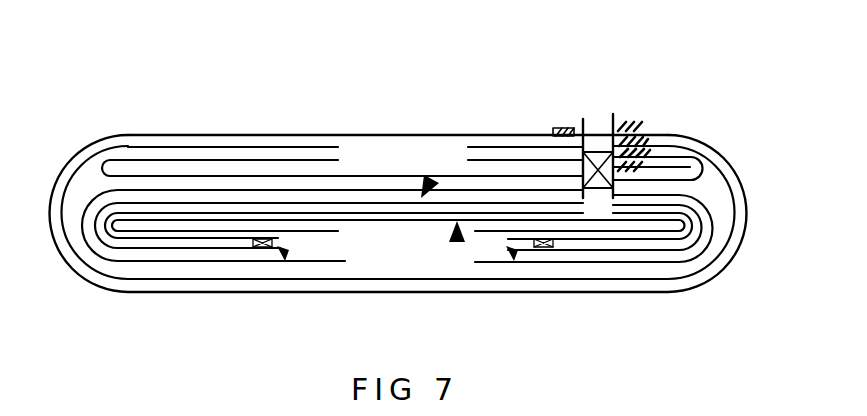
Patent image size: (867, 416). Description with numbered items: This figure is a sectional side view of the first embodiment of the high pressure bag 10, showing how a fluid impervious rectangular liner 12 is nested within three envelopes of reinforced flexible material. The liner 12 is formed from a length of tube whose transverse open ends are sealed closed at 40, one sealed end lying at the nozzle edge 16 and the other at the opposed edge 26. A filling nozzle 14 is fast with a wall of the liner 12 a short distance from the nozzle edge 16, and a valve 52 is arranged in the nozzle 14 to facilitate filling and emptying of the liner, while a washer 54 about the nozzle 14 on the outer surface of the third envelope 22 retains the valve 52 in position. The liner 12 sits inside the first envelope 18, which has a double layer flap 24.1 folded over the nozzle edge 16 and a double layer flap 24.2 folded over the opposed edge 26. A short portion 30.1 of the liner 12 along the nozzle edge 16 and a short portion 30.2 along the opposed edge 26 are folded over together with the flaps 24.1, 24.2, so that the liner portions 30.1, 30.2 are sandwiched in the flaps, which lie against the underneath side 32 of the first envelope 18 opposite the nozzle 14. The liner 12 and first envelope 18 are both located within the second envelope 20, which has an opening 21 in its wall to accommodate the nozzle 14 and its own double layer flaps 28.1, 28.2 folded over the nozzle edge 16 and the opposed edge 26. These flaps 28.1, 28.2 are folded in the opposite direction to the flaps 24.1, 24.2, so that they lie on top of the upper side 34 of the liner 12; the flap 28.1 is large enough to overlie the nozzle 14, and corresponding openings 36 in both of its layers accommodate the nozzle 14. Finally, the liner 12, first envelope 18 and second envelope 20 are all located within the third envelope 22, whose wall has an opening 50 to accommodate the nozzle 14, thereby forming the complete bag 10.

The high pressure bag 10 is at (406, 31).
The liner 12 is at (157, 198).
The filling nozzle 14 is at (614, 118).
The nozzle edge 16 is at (514, 257).
The first envelope 18 is at (513, 190).
The second envelope 20 is at (741, 235).
The opening 21 is at (682, 134).
The third envelope 22 is at (398, 135).
The double layer flap 24.1 is at (484, 263).
The double layer flap 24.2 is at (334, 262).
The opposed edge 26 is at (286, 257).
The double layer flap 28.1 is at (497, 158).
The double layer flap 28.2 is at (291, 146).
The short portion of the liner 30.1 is at (598, 249).
The short portion of the liner 30.2 is at (196, 248).
The underneath side 32 is at (457, 241).
The upper side 34 is at (431, 179).
The openings 36 is at (650, 150).
The sealed ends 40 is at (252, 249).
The opening 50 is at (562, 127).
The valve 52 is at (591, 120).
The washer 54 is at (640, 128).